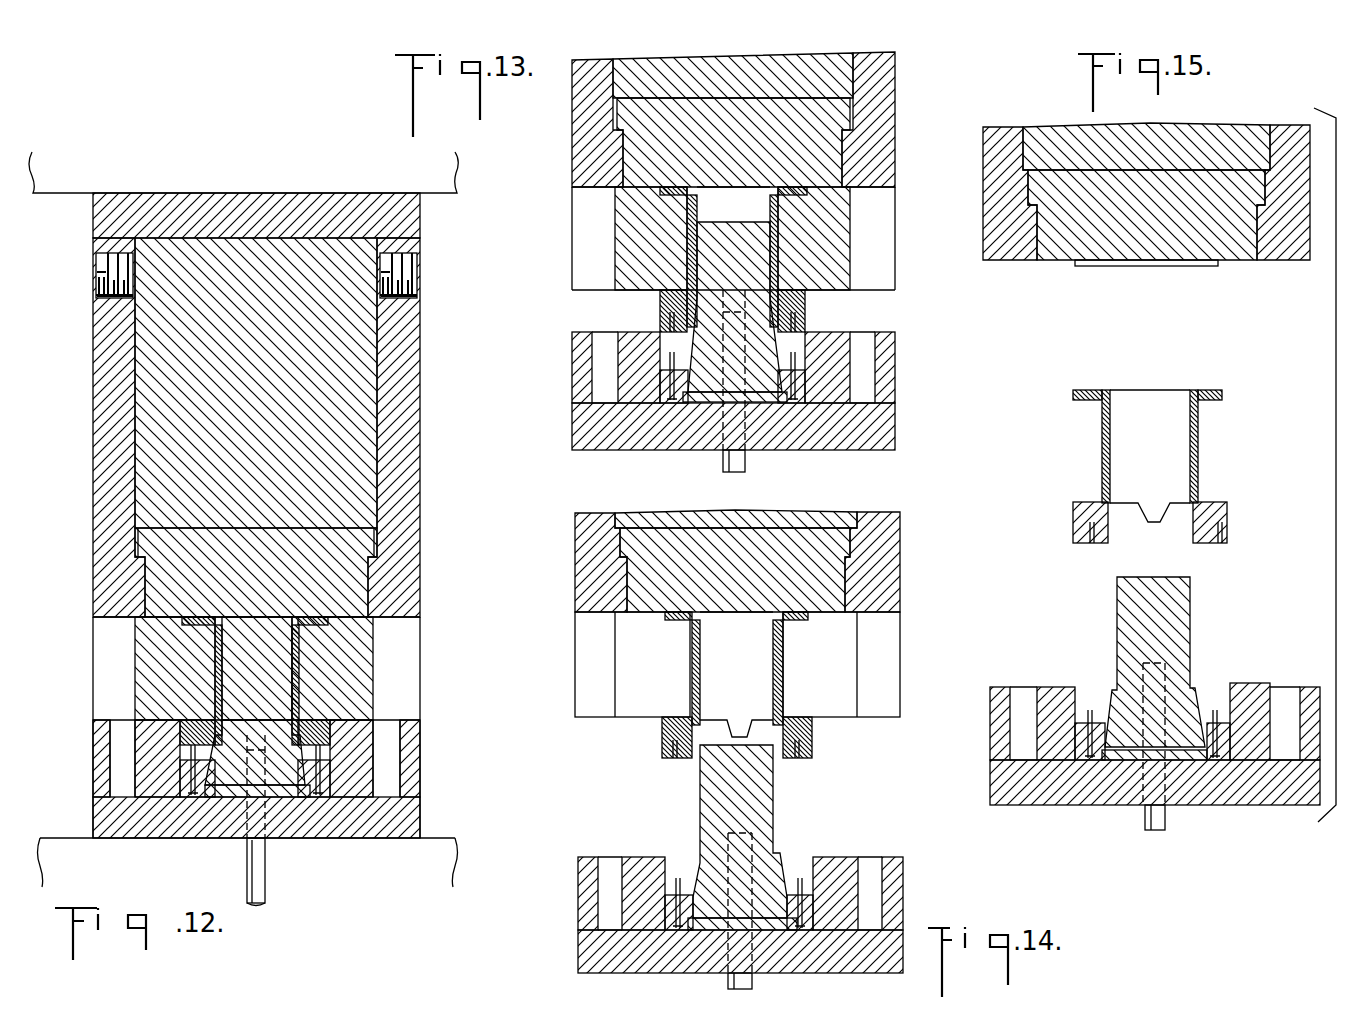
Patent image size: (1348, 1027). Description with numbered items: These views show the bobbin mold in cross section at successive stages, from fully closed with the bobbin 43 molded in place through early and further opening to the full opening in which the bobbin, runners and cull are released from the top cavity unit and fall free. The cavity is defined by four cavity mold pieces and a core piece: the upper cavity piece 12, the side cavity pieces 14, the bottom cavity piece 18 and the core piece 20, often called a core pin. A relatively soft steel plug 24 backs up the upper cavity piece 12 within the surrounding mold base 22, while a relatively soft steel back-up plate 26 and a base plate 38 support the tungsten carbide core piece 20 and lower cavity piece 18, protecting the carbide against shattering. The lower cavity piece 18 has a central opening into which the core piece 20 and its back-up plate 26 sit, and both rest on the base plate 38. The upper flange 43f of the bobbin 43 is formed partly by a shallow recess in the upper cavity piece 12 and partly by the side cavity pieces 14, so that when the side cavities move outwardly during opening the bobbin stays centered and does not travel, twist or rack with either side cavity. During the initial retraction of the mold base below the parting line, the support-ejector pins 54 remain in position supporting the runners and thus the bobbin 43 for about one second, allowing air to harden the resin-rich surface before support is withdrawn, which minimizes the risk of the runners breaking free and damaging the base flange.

In FIG. 12, the upper cavity piece 12 is at (257, 535).
In FIG. 13, the upper cavity piece 12 is at (721, 151).
In FIG. 14, the upper cavity piece 12 is at (726, 576).
In FIG. 15, the upper cavity piece 12 is at (1135, 220).
In FIG. 12, the side cavity piece 14 is at (146, 670).
In FIG. 13, the side cavity piece 14 is at (625, 250).
In FIG. 14, the side cavity piece 14 is at (635, 665).
In FIG. 12, the bottom cavity piece 18 is at (350, 732).
In FIG. 13, the bottom cavity piece 18 is at (642, 338).
In FIG. 14, the bottom cavity piece 18 is at (645, 862).
In FIG. 15, the bottom cavity piece 18 is at (1250, 690).
In FIG. 12, the core piece 20 is at (246, 671).
In FIG. 13, the core piece 20 is at (726, 261).
In FIG. 14, the core piece 20 is at (728, 783).
In FIG. 15, the core piece 20 is at (1120, 617).
In FIG. 12, the die housing 22 is at (411, 413).
In FIG. 13, the die housing 22 is at (888, 157).
In FIG. 14, the die housing 22 is at (890, 548).
In FIG. 15, the die housing 22 is at (992, 200).
In FIG. 12, the steel plug 24 is at (246, 346).
In FIG. 13, the steel plug 24 is at (725, 86).
In FIG. 14, the steel plug 24 is at (683, 512).
In FIG. 15, the steel plug 24 is at (1052, 132).
In FIG. 12, the back-up plate 26 is at (218, 797).
In FIG. 15, the back-up plate 26 is at (1113, 762).
In FIG. 12, the base plate 38 is at (178, 838).
In FIG. 13, the base plate 38 is at (613, 440).
In FIG. 14, the base plate 38 is at (592, 948).
In FIG. 15, the base plate 38 is at (1003, 783).
In FIG. 14, the bobbin 43 is at (782, 692).
In FIG. 15, the bobbin 43 is at (1202, 447).
In FIG. 14, the upper flange 43f is at (797, 618).
In FIG. 15, the upper flange 43f is at (1215, 390).
In FIG. 12, the support-ejector pins 54 is at (248, 780).
In FIG. 13, the support-ejector pins 54 is at (720, 375).
In FIG. 14, the support-ejector pins 54 is at (727, 855).
In FIG. 15, the support-ejector pins 54 is at (1160, 692).